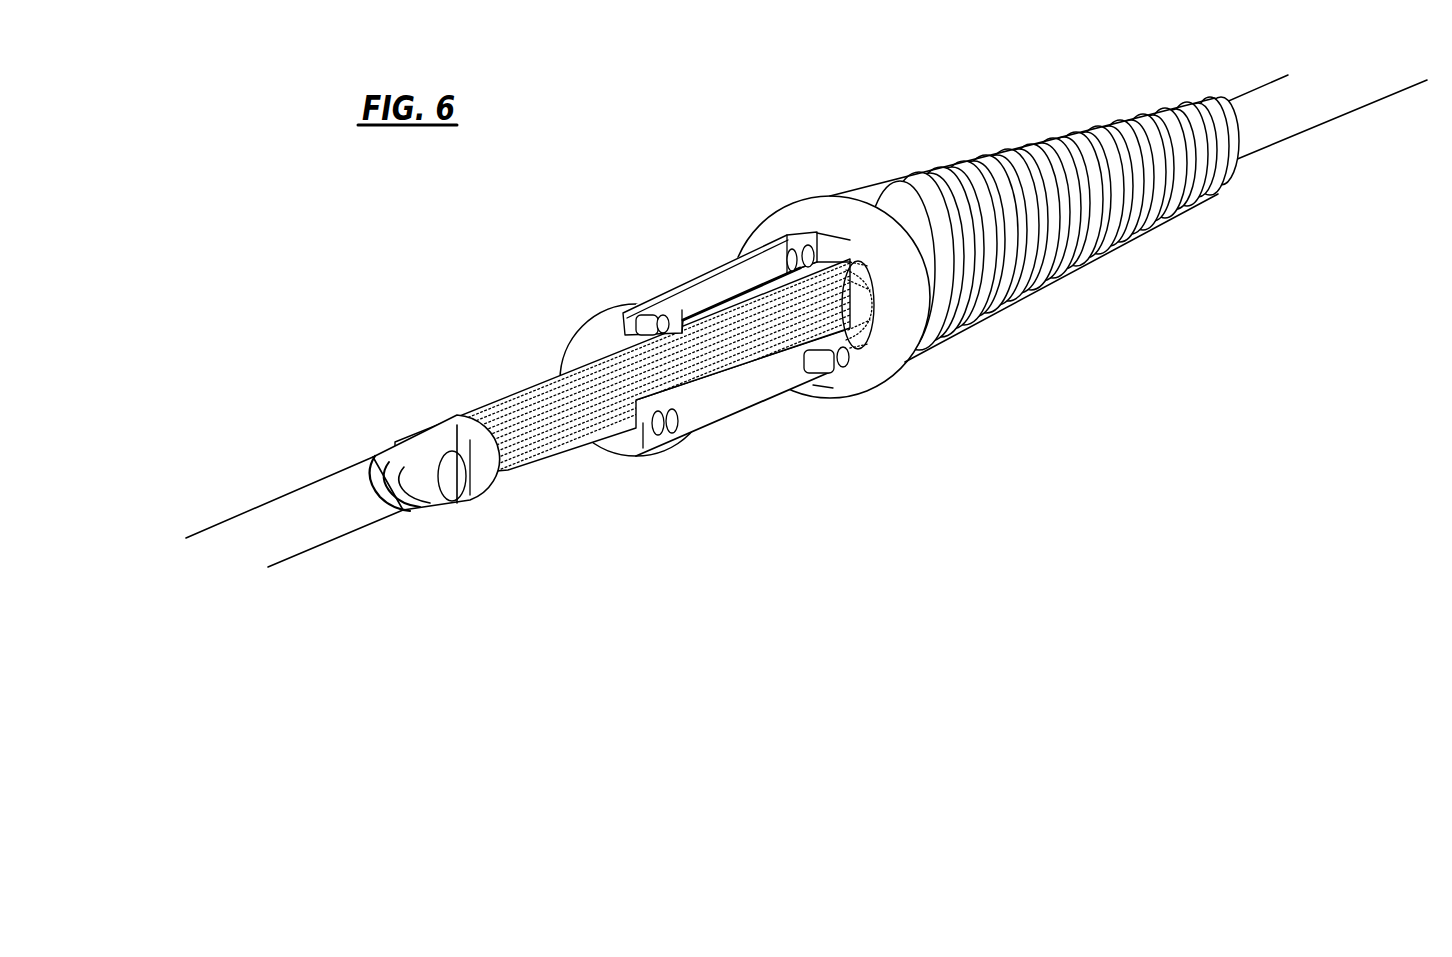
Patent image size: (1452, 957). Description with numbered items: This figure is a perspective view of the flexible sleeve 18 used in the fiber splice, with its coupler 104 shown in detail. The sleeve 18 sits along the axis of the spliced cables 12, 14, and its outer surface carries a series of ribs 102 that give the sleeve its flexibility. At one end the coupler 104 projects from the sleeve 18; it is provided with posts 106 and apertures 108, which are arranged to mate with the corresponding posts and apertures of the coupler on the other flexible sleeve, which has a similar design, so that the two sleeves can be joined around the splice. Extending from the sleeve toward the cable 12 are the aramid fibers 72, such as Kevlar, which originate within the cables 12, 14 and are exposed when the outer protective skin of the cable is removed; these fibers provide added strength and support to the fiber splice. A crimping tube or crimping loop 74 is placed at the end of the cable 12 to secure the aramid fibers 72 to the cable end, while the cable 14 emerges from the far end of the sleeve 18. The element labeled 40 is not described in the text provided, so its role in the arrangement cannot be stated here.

The cable 12 is at (343, 500).
The cable 14 is at (1273, 122).
The flexible sleeve 18 is at (984, 222).
The lower clamp body 40 is at (742, 410).
The aramid fibers 72 is at (543, 377).
The crimping loop 74 is at (452, 425).
The ribs 102 is at (1007, 150).
The coupler 104 is at (707, 292).
The posts 106 is at (653, 312).
The apertures 108 is at (797, 250).